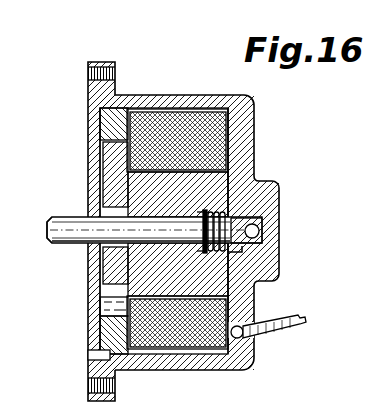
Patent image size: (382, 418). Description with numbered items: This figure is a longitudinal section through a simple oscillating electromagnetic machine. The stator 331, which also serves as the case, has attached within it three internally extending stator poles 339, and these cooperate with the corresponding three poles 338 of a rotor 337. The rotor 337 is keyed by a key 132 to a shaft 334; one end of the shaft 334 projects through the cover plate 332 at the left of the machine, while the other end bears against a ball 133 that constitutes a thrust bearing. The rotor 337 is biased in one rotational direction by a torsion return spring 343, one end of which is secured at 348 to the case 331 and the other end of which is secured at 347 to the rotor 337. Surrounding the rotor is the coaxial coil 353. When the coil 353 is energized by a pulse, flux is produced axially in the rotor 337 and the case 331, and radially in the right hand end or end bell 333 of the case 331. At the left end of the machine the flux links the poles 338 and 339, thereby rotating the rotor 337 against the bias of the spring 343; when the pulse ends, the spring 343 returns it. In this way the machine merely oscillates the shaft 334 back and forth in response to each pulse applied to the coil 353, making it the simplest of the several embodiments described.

The key 132 is at (160, 246).
The ball 133 is at (259, 232).
The stator 331 is at (173, 100).
The cover plate 332 is at (88, 111).
The end bell 333 is at (250, 305).
The shaft 334 is at (72, 240).
The rotor 337 is at (140, 193).
The rotor poles 338 is at (110, 163).
The stator poles 339 is at (115, 120).
The torsion return spring 343 is at (218, 213).
The spring securing point on rotor 347 is at (197, 210).
The spring securing point on case 348 is at (241, 251).
The coaxial coil 353 is at (223, 138).